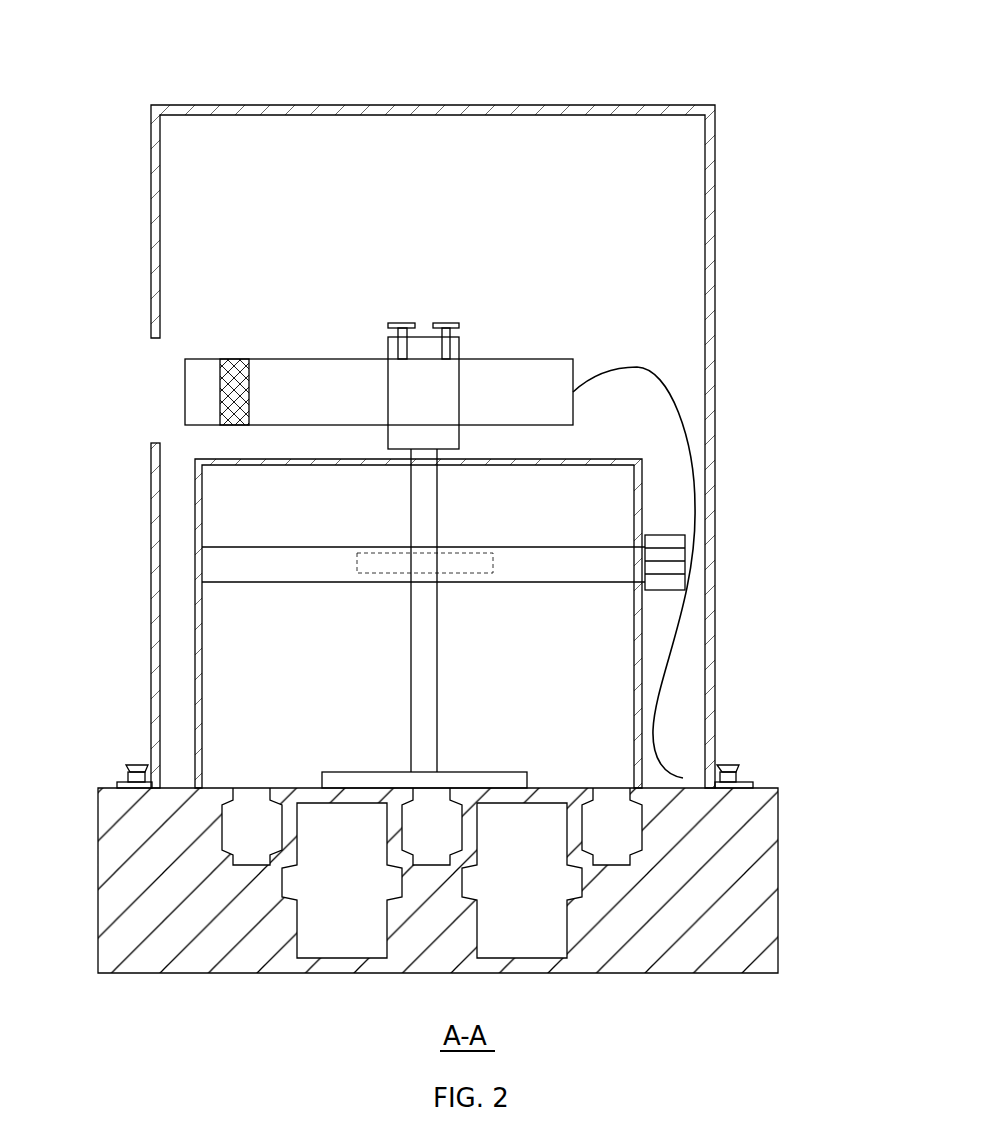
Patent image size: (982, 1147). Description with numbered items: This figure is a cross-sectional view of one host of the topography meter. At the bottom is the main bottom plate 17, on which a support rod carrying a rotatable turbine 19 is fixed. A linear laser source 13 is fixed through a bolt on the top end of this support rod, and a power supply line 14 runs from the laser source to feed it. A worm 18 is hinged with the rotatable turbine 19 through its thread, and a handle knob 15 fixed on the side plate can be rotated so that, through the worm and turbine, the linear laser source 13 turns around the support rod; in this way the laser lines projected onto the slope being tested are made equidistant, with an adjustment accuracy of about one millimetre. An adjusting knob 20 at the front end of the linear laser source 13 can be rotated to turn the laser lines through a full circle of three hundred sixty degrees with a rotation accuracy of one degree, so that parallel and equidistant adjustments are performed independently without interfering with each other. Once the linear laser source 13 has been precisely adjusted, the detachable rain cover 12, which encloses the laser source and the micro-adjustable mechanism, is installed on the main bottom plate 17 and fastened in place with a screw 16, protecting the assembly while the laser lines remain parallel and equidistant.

The detachable rain cover 12 is at (714, 105).
The linear laser source 13 is at (575, 362).
The power supply line 14 is at (680, 407).
The handle knob 15 is at (662, 535).
The screw 16 is at (728, 762).
The main bottom plate 17 is at (778, 833).
The worm 18 is at (232, 565).
The rotatable turbine 19 is at (355, 547).
The adjusting knob 20 is at (235, 358).